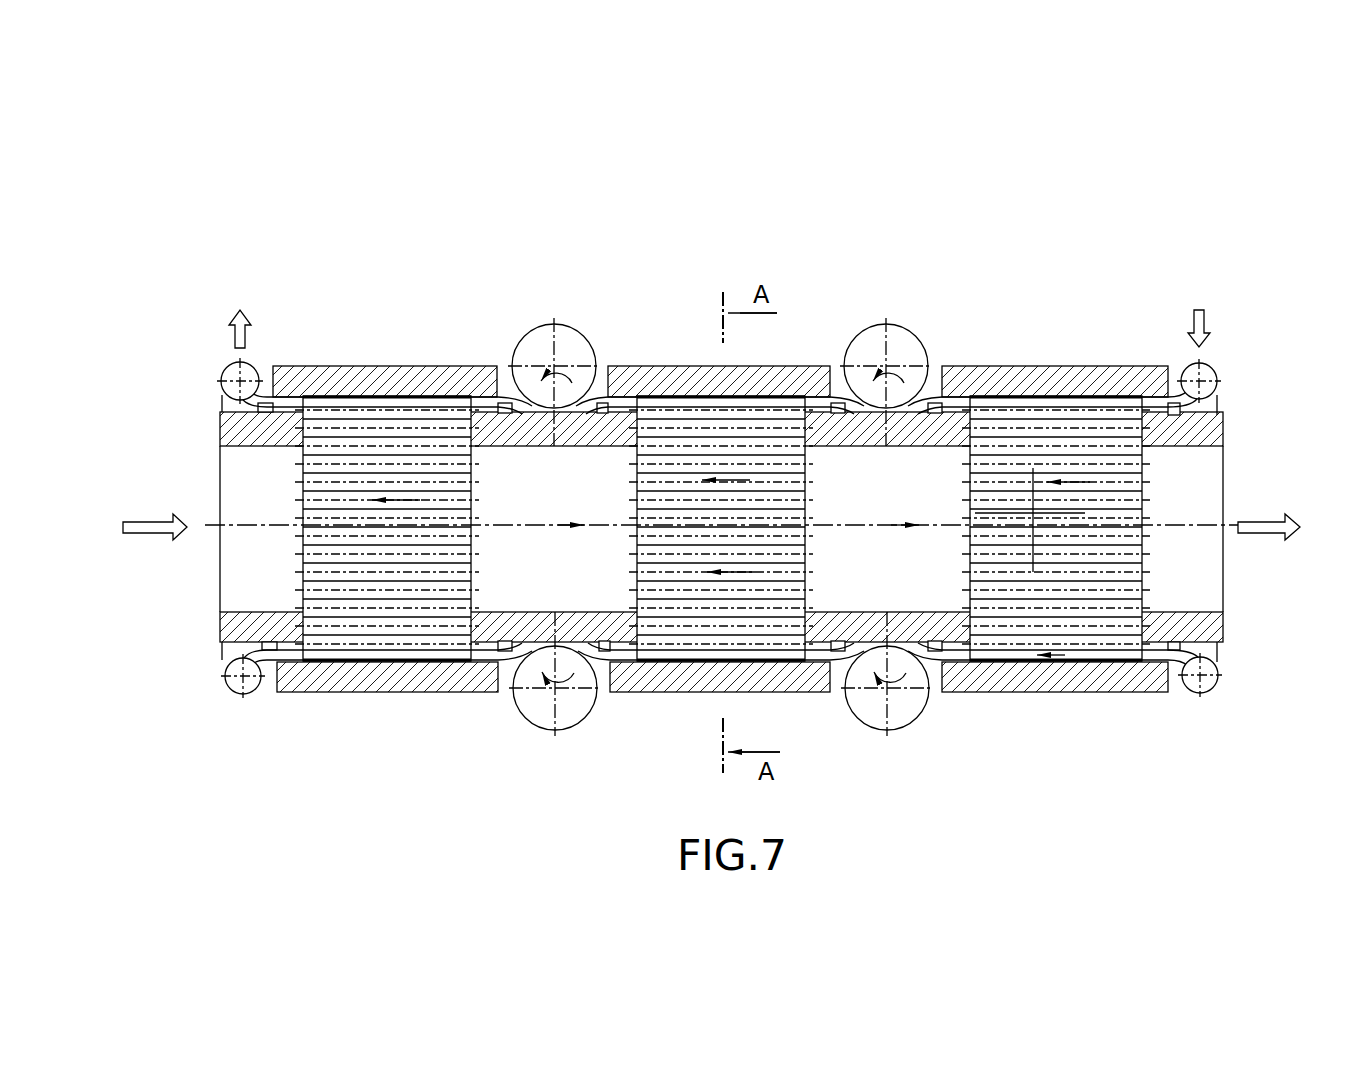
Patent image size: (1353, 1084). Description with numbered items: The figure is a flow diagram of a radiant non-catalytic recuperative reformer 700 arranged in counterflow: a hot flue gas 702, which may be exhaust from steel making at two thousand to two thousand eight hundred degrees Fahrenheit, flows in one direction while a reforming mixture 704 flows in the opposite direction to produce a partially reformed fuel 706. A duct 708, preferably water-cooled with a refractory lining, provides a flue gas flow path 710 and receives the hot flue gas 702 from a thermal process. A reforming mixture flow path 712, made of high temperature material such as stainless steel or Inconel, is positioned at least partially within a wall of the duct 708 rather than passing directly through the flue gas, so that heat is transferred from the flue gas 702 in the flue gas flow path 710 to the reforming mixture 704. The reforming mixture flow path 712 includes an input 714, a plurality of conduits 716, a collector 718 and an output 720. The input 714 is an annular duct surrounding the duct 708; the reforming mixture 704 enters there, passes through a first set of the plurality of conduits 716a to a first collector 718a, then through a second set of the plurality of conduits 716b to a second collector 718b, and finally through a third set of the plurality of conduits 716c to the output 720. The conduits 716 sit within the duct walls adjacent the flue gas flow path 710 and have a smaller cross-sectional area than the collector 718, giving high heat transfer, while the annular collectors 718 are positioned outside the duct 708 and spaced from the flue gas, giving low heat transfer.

The radiant non-catalytic recuperative reformer 700 is at (1164, 232).
The hot flue gas 702 is at (148, 536).
The reforming mixture 704 is at (1207, 316).
The partially reformed fuel 706 is at (248, 321).
The duct 708 is at (992, 378).
The flue gas flow path 710 is at (287, 583).
The reforming mixture flow path 712 is at (566, 360).
The input 714 is at (1212, 368).
The plurality of conduits 716 is at (440, 607).
The first set of the plurality of conduits 716a is at (1148, 463).
The second set of the plurality of conduits 716b is at (673, 410).
The third set of the plurality of conduits 716c is at (395, 410).
The collector 718 is at (558, 326).
The first collector 718a is at (867, 328).
The second collector 718b is at (531, 328).
The output 720 is at (252, 368).